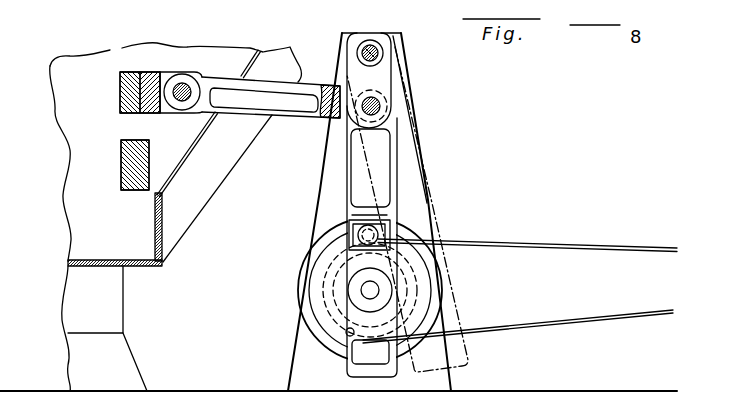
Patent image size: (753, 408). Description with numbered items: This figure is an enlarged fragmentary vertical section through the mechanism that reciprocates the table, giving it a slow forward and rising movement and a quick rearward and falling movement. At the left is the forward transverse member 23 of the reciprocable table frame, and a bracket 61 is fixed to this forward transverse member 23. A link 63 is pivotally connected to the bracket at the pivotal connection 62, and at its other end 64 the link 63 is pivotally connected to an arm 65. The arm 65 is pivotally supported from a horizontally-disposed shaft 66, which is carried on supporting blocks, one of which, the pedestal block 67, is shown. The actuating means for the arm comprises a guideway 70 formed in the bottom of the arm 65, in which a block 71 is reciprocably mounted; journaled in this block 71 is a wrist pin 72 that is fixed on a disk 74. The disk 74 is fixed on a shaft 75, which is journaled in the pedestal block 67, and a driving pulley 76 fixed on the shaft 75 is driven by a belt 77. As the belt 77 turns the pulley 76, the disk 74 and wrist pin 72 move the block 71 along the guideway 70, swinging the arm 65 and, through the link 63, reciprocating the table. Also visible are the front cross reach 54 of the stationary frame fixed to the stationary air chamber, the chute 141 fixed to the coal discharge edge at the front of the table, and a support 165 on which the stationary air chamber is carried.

The forward transverse member 23 is at (128, 73).
The front cross reach 54 is at (132, 165).
The bracket 61 is at (162, 71).
The pivotal connection 62 is at (183, 89).
The link 63 is at (264, 97).
The other end of link 64 is at (380, 106).
The arm 65 is at (346, 154).
The shaft 66 is at (376, 54).
The supporting block 67 is at (409, 64).
The guideway 70 is at (350, 331).
The block 71 is at (349, 228).
The wrist pin 72 is at (374, 234).
The disk 74 is at (298, 279).
The shaft 75 is at (372, 292).
The driving pulley 76 is at (318, 300).
The belt 77 is at (593, 243).
The chute 141 is at (87, 227).
The support 165 is at (122, 357).